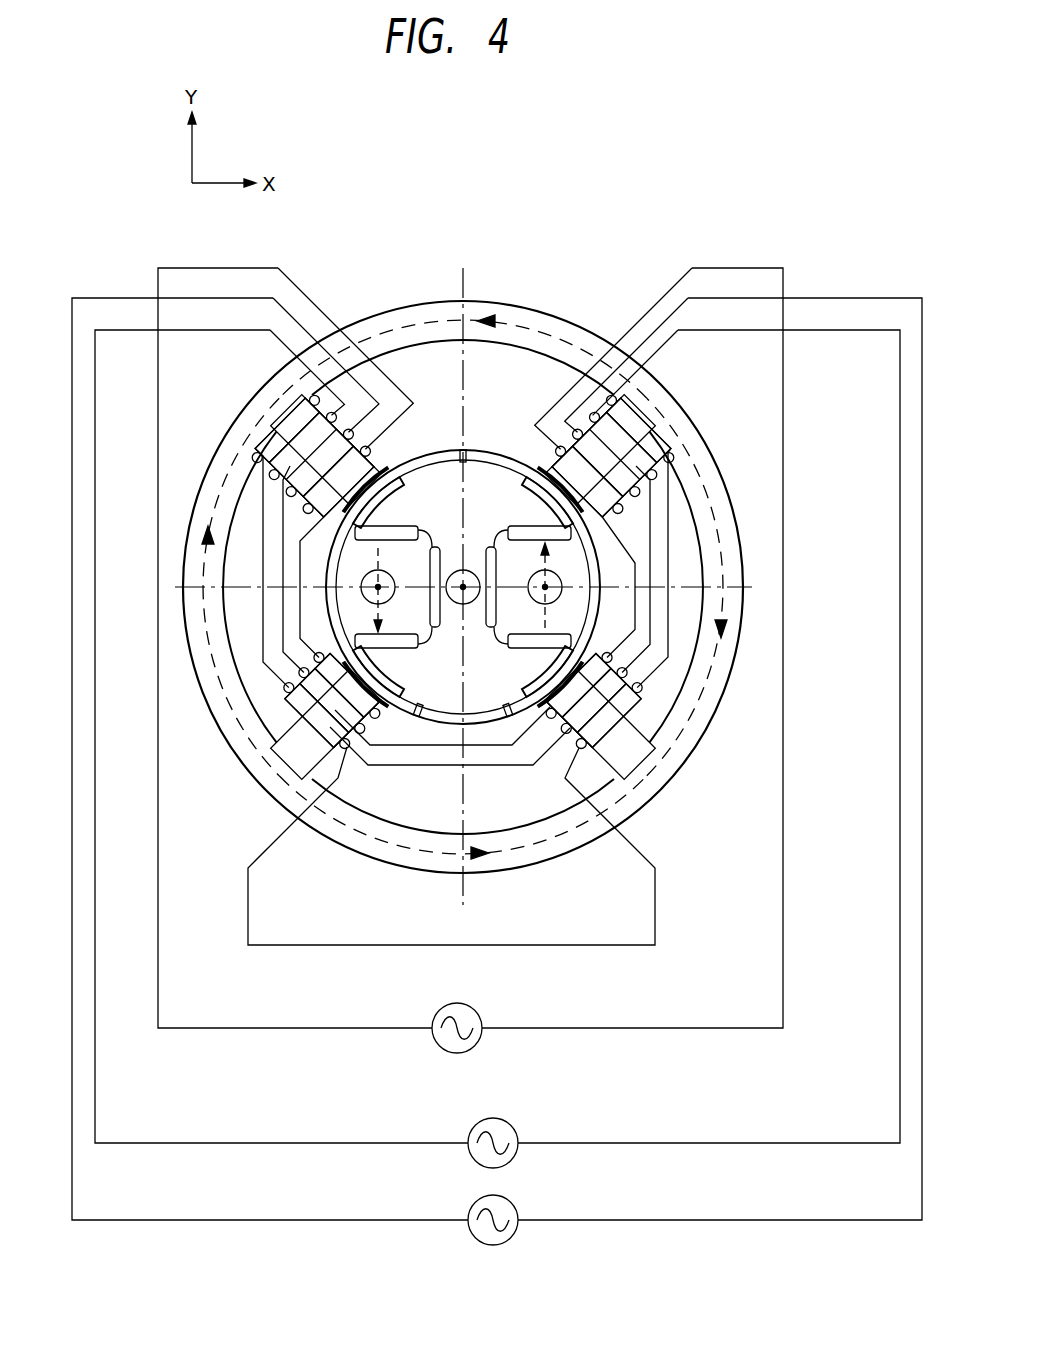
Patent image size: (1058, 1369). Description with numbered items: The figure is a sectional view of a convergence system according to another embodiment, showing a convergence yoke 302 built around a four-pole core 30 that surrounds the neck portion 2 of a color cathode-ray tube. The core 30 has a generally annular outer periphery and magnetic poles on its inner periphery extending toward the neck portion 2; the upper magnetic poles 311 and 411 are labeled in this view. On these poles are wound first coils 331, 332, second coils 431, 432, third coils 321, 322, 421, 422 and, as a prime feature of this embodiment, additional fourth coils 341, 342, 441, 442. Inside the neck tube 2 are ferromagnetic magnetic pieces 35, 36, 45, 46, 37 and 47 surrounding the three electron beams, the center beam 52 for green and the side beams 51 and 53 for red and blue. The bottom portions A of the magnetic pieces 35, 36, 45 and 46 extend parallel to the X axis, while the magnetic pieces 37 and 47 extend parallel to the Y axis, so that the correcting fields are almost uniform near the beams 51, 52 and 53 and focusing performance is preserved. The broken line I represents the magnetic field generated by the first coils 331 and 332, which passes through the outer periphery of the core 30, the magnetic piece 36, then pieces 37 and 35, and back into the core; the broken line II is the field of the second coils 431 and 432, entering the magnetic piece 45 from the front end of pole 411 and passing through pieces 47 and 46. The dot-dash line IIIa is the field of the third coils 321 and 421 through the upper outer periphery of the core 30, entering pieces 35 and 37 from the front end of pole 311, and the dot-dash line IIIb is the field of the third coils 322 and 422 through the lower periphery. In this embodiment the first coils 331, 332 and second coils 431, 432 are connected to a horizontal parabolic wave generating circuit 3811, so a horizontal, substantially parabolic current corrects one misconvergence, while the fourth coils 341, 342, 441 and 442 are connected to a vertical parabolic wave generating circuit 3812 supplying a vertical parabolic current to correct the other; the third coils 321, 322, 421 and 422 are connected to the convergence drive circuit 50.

The neck portion 2 is at (463, 613).
The four-pole core 30 is at (467, 564).
The convergence yoke 302 is at (592, 292).
The magnetic pole 311 is at (565, 400).
The magnetic pole 411 is at (343, 395).
The third coil 321 is at (603, 450).
The first coil 331 is at (627, 430).
The fourth coil 341 is at (683, 517).
The third coil 322 is at (625, 765).
The first coil 332 is at (662, 748).
The fourth coil 342 is at (660, 722).
The third coil 421 is at (300, 458).
The second coil 431 is at (320, 412).
The fourth coil 441 is at (270, 462).
The third coil 422 is at (295, 782).
The second coil 432 is at (290, 738).
The fourth coil 442 is at (300, 695).
The magnetic piece 35 is at (518, 478).
The magnetic piece 36 is at (520, 688).
The magnetic piece 45 is at (412, 478).
The magnetic piece 46 is at (402, 682).
The magnetic piece 37 is at (493, 548).
The magnetic piece 47 is at (437, 548).
The electron beam 51 is at (555, 580).
The electron beam 52 is at (462, 582).
The electron beam 53 is at (372, 582).
The bottom portion A is at (476, 536).
The convergence drive circuit 50 is at (471, 1013).
The horizontal parabolic wave generating circuit 3811 is at (515, 1130).
The vertical parabolic wave generating circuit 3812 is at (515, 1208).
The magnetic field I is at (730, 482).
The magnetic field II is at (207, 470).
The magnetic field IIIa is at (520, 318).
The magnetic field IIIb is at (392, 848).